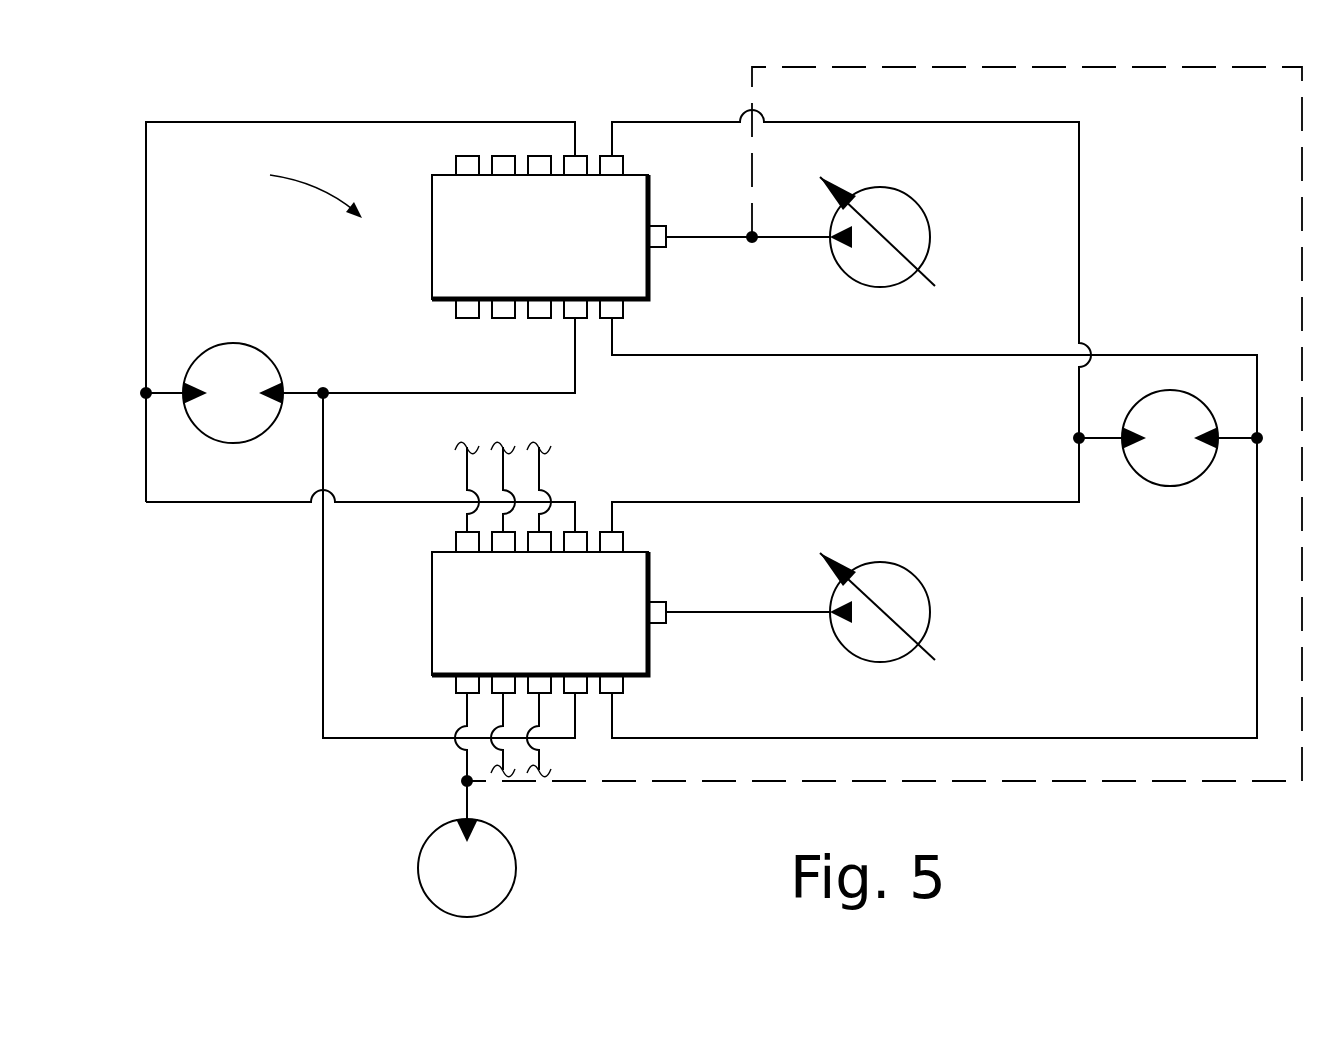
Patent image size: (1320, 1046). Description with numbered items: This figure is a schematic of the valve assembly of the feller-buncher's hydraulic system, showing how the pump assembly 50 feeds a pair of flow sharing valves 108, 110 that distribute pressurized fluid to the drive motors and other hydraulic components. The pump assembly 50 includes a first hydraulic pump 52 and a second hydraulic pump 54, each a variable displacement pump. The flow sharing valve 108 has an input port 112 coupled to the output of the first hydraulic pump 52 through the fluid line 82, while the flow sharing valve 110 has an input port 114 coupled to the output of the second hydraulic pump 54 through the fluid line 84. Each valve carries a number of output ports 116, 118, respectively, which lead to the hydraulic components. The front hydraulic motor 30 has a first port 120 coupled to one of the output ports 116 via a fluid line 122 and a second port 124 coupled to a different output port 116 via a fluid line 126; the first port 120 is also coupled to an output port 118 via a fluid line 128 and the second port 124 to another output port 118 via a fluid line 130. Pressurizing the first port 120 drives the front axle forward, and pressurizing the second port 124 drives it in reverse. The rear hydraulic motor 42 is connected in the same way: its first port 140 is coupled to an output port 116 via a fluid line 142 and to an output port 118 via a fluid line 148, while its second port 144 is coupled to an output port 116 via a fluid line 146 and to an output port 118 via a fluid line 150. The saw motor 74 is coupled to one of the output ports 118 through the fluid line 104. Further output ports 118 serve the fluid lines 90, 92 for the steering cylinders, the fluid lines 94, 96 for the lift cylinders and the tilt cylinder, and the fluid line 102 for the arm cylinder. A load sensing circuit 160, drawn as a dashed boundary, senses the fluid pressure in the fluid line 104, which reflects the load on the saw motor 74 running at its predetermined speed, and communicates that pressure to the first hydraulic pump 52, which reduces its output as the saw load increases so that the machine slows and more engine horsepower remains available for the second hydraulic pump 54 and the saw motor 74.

The front hydraulic motor 30 is at (262, 363).
The rear hydraulic motor 42 is at (1198, 470).
The pump assembly 50 is at (296, 190).
The first hydraulic pump 52 is at (880, 280).
The second hydraulic pump 54 is at (915, 582).
The saw motor 74 is at (512, 862).
The fluid line 82 is at (712, 239).
The fluid line 84 is at (745, 612).
The fluid line 90 is at (541, 470).
The fluid line 92 is at (545, 770).
The fluid line 94 is at (505, 460).
The fluid line 96 is at (534, 778).
The fluid line 102 is at (462, 486).
The fluid line 104 is at (462, 772).
The flow sharing valve 108 is at (432, 262).
The flow sharing valve 110 is at (432, 619).
The input port 112 is at (660, 226).
The input port 114 is at (660, 602).
The output ports 116 is at (456, 168).
The output ports 118 is at (456, 541).
The first port 120 is at (178, 406).
The fluid line 122 is at (305, 122).
The second port 124 is at (287, 406).
The fluid line 126 is at (385, 393).
The fluid line 128 is at (220, 503).
The fluid line 130 is at (323, 692).
The first port 140 is at (1117, 430).
The fluid line 142 is at (1080, 246).
The second port 144 is at (1220, 430).
The fluid line 146 is at (1128, 355).
The fluid line 148 is at (806, 502).
The fluid line 150 is at (1045, 738).
The load sensing circuit 160 is at (918, 67).